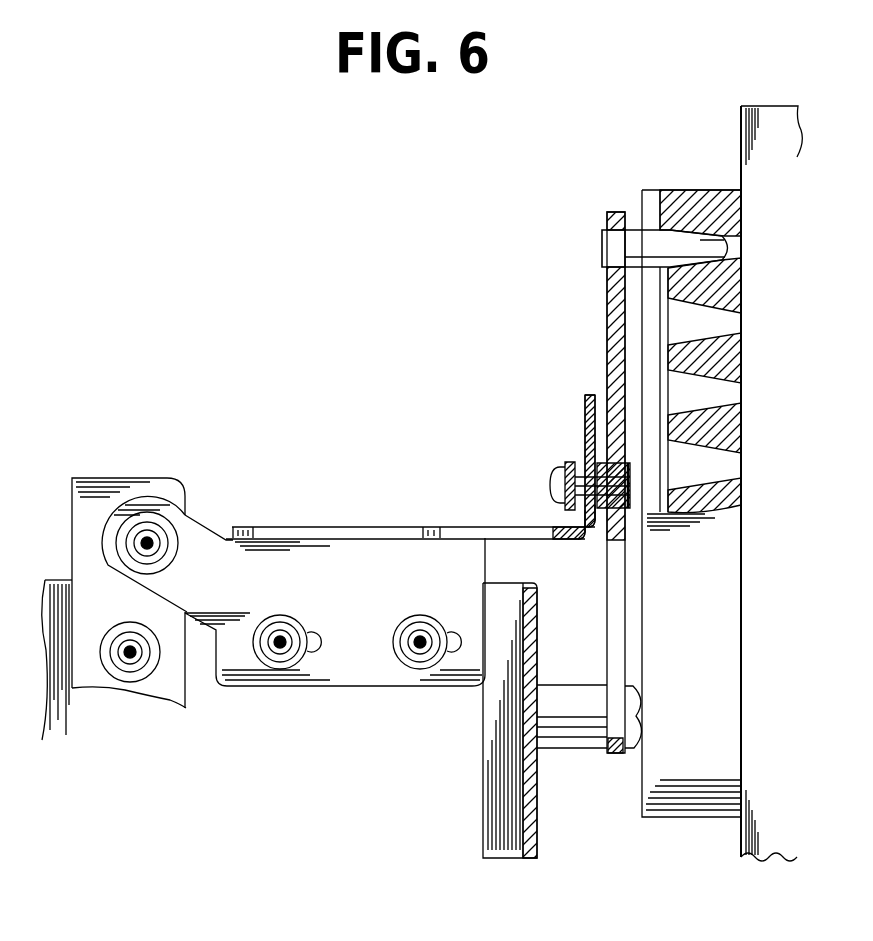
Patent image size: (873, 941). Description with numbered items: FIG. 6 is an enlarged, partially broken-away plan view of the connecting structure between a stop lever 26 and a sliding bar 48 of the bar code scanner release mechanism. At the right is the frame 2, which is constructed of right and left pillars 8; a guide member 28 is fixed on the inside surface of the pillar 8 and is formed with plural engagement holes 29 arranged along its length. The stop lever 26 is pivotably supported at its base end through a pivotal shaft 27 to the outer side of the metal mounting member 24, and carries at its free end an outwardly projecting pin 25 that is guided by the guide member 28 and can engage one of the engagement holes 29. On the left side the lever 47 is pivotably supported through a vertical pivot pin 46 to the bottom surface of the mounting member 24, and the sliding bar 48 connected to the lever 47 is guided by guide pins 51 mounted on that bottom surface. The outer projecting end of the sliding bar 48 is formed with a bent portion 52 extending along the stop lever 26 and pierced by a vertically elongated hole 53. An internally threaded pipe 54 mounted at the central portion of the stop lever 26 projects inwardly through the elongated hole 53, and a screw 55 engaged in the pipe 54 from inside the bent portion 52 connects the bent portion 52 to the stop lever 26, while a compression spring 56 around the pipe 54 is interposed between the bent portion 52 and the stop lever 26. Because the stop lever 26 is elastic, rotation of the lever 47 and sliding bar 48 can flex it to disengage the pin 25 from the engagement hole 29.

The frame 2 is at (776, 120).
The pillar 8 is at (741, 118).
The mounting member 24 is at (540, 790).
The pin 25 is at (676, 242).
The stop lever 26 is at (606, 216).
The pivotal shaft 27 is at (569, 690).
The guide member 28 is at (700, 190).
The engagement hole 29 is at (741, 313).
The pivot pin 46 is at (130, 668).
The lever 47 is at (120, 490).
The sliding bar 48 is at (287, 568).
The guide pin 51 is at (280, 655).
The bent portion 52 is at (590, 398).
The elongated hole 53 is at (573, 460).
The internally threaded pipe 54 is at (632, 470).
The screw 55 is at (551, 483).
The compression spring 56 is at (599, 522).